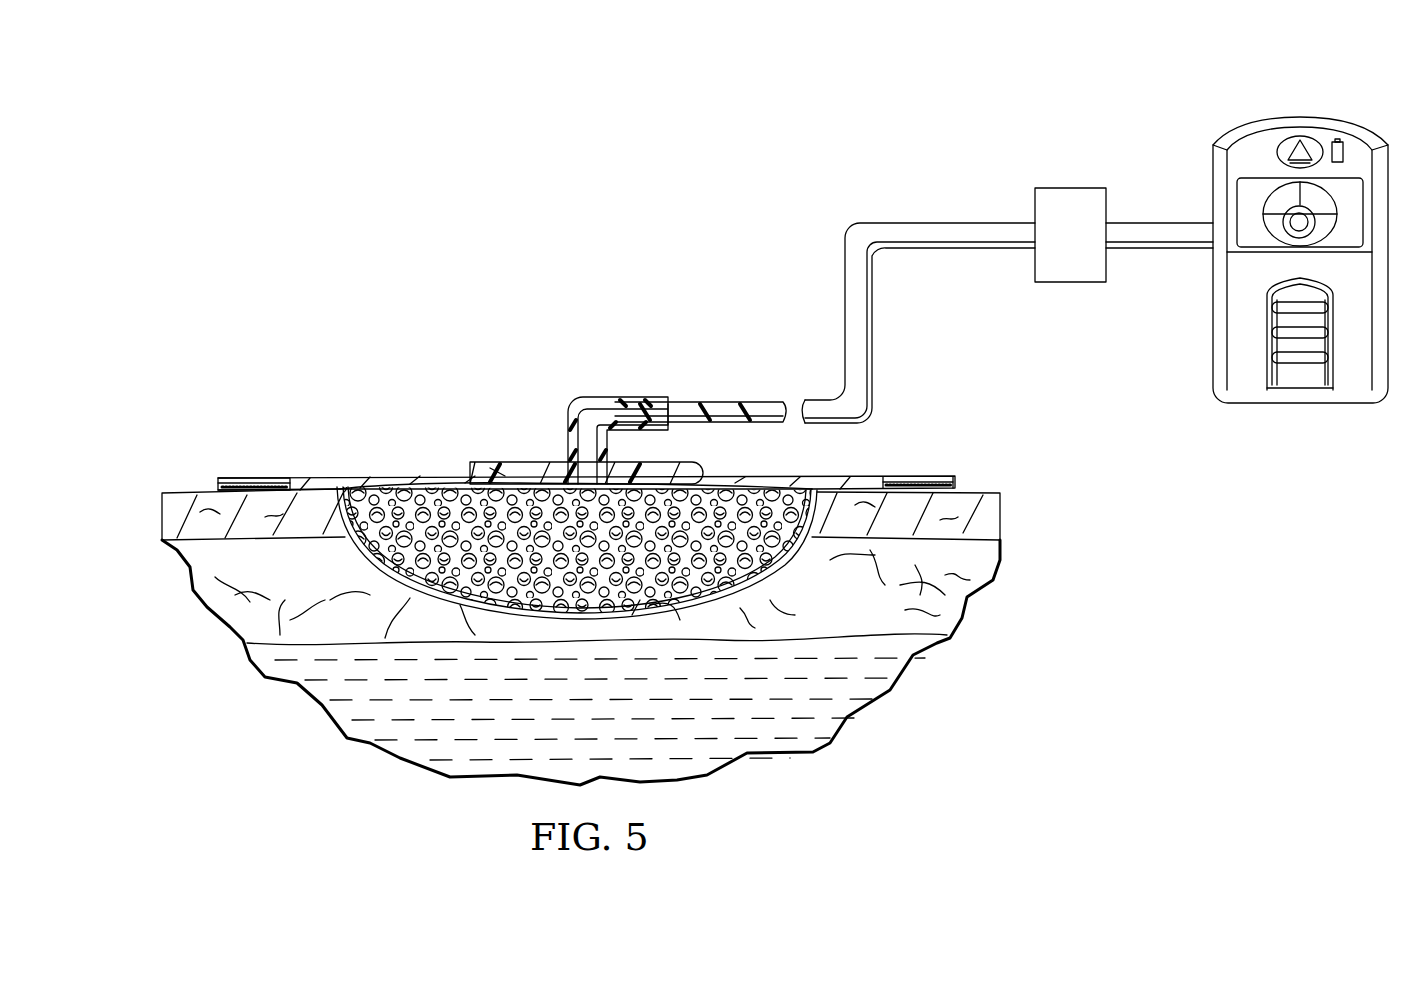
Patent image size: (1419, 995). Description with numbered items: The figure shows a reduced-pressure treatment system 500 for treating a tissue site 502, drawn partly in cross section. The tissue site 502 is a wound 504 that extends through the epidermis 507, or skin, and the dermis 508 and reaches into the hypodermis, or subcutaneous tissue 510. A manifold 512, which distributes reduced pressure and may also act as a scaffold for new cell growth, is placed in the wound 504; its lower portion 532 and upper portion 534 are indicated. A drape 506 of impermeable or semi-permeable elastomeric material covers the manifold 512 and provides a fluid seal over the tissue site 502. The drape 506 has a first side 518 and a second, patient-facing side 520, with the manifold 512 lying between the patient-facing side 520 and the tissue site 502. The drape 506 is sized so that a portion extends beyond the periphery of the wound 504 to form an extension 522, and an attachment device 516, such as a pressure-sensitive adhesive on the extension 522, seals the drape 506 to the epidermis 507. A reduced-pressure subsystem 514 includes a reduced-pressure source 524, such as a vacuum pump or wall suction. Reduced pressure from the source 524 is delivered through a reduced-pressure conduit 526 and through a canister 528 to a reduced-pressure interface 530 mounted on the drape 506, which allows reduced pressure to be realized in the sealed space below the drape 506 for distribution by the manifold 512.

The reduced-pressure treatment system 500 is at (495, 300).
The tissue site 502 is at (348, 558).
The wound 504 is at (402, 585).
The drape 506 is at (220, 472).
The epidermis 507 is at (172, 510).
The dermis 508 is at (975, 572).
The subcutaneous tissue 510 is at (620, 726).
The manifold 512 is at (618, 540).
The reduced-pressure subsystem 514 is at (1316, 222).
The attachment device 516 is at (217, 482).
The first side 518 is at (306, 478).
The second, patient-facing side 520 is at (340, 486).
The extension 522 is at (256, 476).
The reduced-pressure source 524 is at (1370, 130).
The reduced-pressure conduit 526 is at (960, 222).
The canister 528 is at (1073, 187).
The reduced-pressure interface 530 is at (596, 390).
The lower portion 532 is at (497, 606).
The upper portion 534 is at (437, 485).